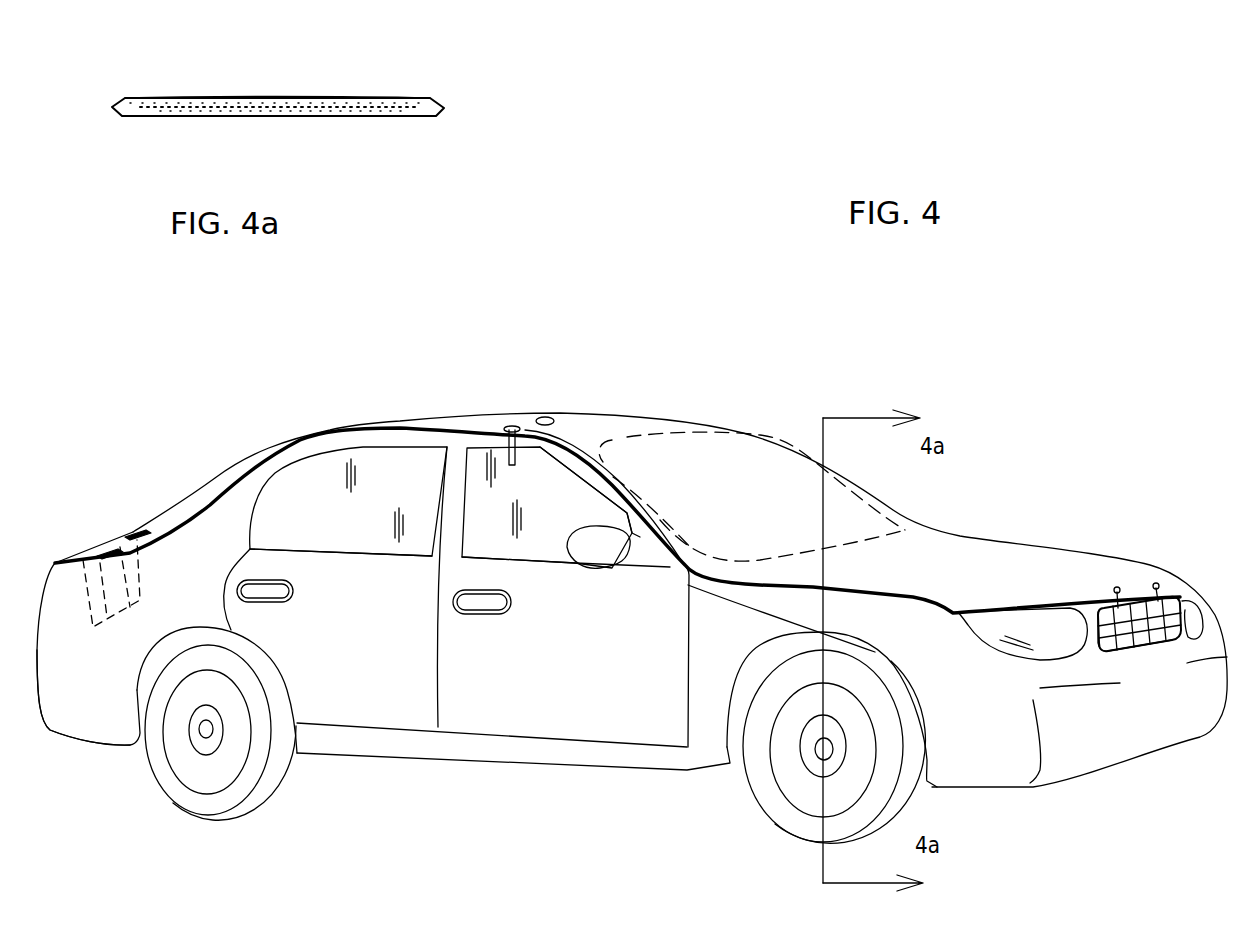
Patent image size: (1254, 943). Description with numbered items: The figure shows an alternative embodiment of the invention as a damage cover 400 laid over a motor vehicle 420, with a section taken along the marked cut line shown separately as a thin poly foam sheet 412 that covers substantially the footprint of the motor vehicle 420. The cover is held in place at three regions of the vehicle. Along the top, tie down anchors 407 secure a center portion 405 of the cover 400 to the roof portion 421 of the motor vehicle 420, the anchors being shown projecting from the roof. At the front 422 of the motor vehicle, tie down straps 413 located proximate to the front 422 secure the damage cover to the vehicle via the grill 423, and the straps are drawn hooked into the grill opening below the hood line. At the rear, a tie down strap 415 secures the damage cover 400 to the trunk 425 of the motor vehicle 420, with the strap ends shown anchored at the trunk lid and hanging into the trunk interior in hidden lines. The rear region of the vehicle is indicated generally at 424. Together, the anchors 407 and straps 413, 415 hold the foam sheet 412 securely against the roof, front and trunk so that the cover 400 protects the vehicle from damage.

In FIG. 4, the damage cover 400 is at (828, 384).
In FIG. 4, the center portion 405 is at (408, 427).
In FIG. 4, the tie down anchors 407 is at (509, 427).
In FIG. 4A, the poly foam sheet 412 is at (371, 100).
In FIG. 4, the tie down straps 413 is at (1176, 600).
In FIG. 4, the tie down strap 415 is at (130, 534).
In FIG. 4, the motor vehicle 420 is at (383, 613).
In FIG. 4, the roof portion 421 is at (402, 463).
In FIG. 4, the front 422 is at (1090, 535).
In FIG. 4, the grill 423 is at (1137, 657).
In FIG. 4, the rear end of vehicle 424 is at (166, 467).
In FIG. 4, the trunk 425 is at (99, 690).